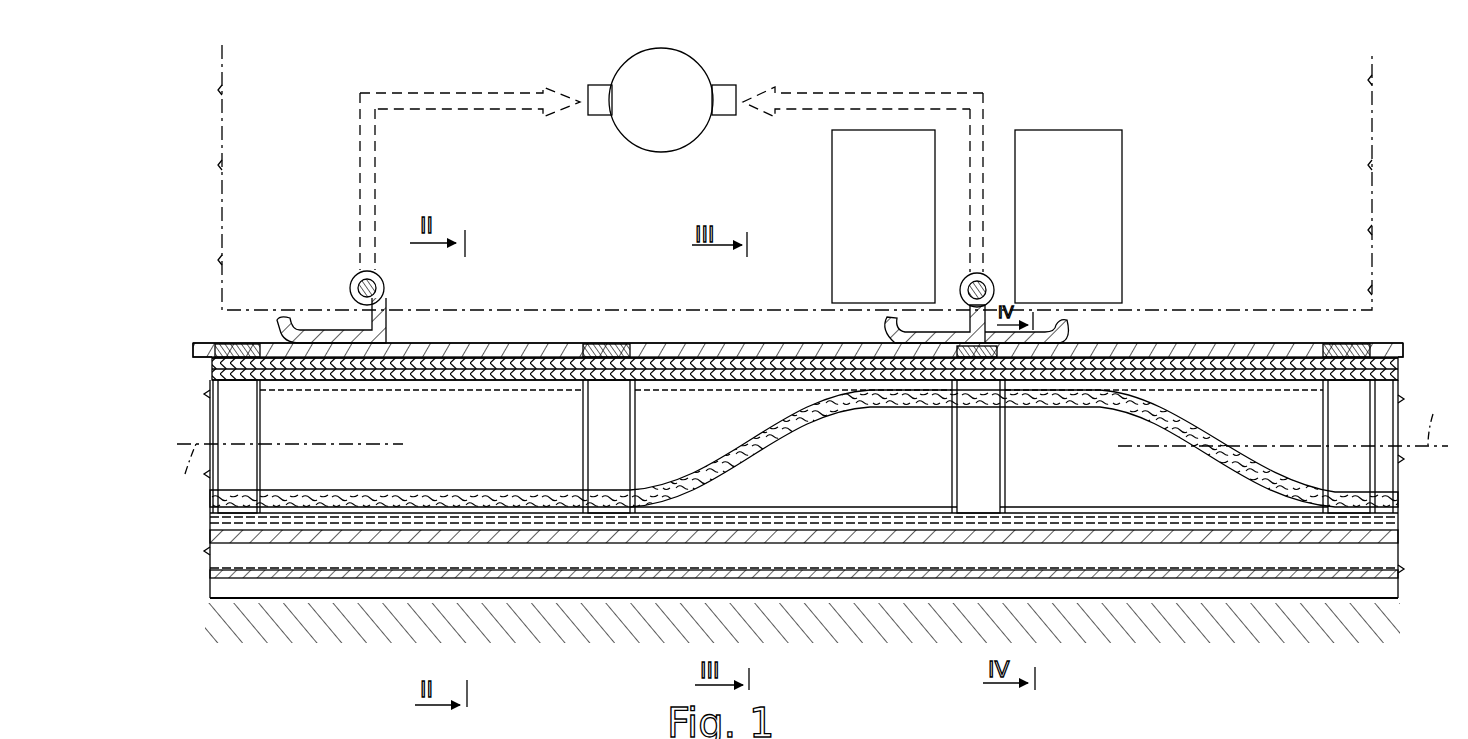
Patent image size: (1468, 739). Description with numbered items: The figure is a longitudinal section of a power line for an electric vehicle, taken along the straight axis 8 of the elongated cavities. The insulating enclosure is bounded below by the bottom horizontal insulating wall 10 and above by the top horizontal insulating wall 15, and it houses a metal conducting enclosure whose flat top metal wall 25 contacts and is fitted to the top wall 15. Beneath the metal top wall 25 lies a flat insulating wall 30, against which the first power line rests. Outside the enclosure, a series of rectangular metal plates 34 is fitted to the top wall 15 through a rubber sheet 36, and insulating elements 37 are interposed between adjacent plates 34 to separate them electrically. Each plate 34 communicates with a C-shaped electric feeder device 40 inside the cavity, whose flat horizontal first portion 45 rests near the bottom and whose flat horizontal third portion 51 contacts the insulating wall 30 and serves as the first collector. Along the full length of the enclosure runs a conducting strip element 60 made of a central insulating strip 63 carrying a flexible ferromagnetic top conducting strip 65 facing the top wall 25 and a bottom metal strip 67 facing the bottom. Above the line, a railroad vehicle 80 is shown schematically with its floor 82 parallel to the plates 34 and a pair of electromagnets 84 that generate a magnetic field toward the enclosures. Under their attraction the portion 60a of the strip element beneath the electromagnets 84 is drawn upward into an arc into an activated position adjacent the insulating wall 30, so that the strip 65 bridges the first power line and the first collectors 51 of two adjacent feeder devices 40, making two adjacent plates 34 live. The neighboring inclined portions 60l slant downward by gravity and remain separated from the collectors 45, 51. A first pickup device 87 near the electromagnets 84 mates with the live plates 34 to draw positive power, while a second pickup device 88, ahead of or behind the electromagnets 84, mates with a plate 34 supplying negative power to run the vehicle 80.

The axis 8 is at (808, 444).
The bottom horizontal insulating wall 10 is at (808, 578).
The top horizontal insulating wall 15 is at (800, 360).
The flat top metal wall 25 is at (688, 360).
The flat insulating wall 30 is at (660, 376).
The rectangular metal plate 34 is at (500, 345).
The rubber sheet 36 is at (715, 360).
The insulating element 37 is at (236, 343).
The electric feeder device 40 is at (246, 486).
The flat horizontal first portion 45 is at (347, 514).
The flat horizontal third portion 51 is at (375, 388).
The conducting strip element 60 is at (524, 475).
The portion of conducting strip element 60a is at (940, 418).
The inclined portions 60l is at (690, 468).
The central insulating strip 63 is at (462, 498).
The flexible top conducting strip 65 is at (406, 488).
The metal strip 67 is at (818, 428).
The railroad vehicle 80 is at (218, 193).
The floor 82 is at (556, 320).
The electromagnets 84 is at (855, 200).
The first pickup device 87 is at (940, 340).
The second pickup device 88 is at (292, 340).